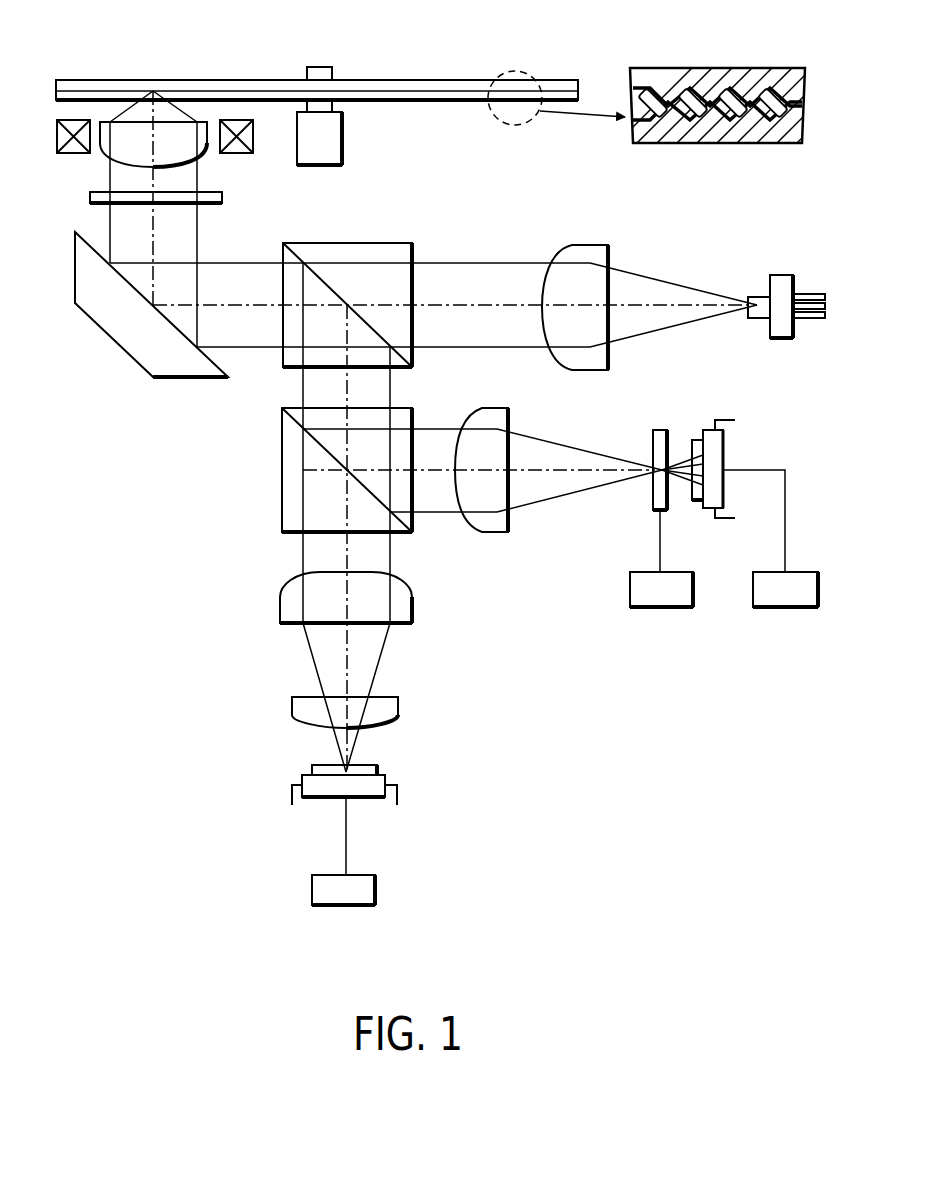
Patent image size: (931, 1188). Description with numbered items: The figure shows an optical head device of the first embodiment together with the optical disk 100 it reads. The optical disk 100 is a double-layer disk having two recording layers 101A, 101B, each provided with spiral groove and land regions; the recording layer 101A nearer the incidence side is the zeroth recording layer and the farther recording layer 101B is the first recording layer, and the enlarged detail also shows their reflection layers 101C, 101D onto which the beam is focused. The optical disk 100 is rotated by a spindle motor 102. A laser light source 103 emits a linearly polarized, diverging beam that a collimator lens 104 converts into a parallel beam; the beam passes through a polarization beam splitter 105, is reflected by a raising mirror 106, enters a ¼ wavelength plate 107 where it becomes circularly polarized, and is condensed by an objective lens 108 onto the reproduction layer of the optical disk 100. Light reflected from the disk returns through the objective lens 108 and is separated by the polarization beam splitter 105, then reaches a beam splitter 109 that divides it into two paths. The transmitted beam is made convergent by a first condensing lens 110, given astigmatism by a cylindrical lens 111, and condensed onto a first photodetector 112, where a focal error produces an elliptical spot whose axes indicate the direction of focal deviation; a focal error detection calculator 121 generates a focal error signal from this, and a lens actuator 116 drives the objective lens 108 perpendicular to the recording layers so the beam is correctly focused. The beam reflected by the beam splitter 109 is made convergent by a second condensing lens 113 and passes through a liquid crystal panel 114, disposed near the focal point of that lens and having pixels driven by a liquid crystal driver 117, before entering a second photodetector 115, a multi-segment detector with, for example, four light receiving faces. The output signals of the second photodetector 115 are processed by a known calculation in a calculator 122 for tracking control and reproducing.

The optical disk 100 is at (372, 73).
The recording layer 101A is at (757, 133).
The recording layer 101B is at (740, 75).
The reflection layer 101C is at (667, 120).
The reflection layer 101D is at (657, 68).
The spindle motor 102 is at (330, 137).
The laser light source 103 is at (782, 280).
The collimator lens 104 is at (588, 252).
The polarization beam splitter 105 is at (397, 257).
The raising mirror 106 is at (118, 337).
The ¼ wavelength plate 107 is at (220, 200).
The objective lens 108 is at (180, 143).
The beam splitter 109 is at (285, 467).
The first condensing lens 110 is at (288, 610).
The cylindrical lens 111 is at (300, 708).
The first photodetector 112 is at (322, 790).
The second condensing lens 113 is at (497, 418).
The liquid crystal panel 114 is at (670, 503).
The second photodetector 115 is at (720, 452).
The lens actuator 116 is at (63, 153).
The liquid crystal driver 117 is at (672, 597).
The focal error detection calculator 121 is at (357, 900).
The calculator 122 is at (797, 597).